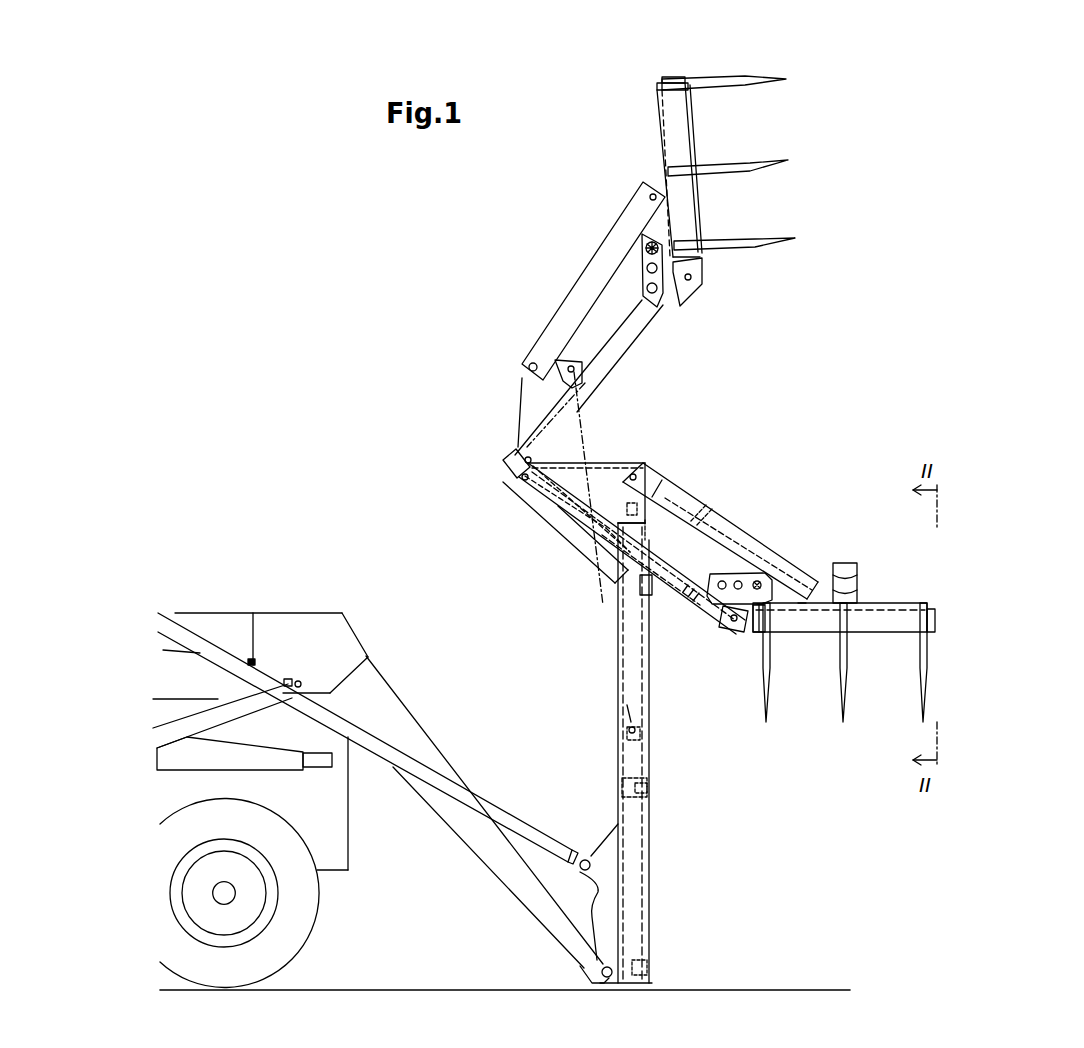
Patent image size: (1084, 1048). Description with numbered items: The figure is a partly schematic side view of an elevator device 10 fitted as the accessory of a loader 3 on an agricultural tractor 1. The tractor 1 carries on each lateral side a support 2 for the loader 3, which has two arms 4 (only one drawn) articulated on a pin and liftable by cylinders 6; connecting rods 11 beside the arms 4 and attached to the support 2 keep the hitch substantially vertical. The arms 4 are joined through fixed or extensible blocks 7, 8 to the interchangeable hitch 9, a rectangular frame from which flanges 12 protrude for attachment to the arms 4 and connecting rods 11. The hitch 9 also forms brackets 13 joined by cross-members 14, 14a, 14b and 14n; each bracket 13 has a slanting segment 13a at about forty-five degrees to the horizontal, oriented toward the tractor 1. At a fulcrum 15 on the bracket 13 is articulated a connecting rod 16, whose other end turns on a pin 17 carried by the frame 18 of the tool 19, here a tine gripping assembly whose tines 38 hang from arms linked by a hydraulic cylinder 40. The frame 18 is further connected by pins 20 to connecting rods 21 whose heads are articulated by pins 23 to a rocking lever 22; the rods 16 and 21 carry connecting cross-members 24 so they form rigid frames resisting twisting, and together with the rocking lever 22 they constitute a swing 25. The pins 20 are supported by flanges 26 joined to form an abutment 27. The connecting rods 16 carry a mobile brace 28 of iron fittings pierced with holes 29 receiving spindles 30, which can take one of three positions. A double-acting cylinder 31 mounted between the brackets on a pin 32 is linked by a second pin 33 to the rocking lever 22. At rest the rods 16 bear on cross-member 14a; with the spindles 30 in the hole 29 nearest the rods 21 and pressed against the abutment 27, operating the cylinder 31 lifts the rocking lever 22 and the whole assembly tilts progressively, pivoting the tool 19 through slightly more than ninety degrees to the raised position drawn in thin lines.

The agricultural tractor 1 is at (330, 850).
The support 2 is at (265, 765).
The loader 3 is at (432, 812).
The arm 4 is at (415, 732).
The cylinder 6 is at (254, 702).
The block 7 is at (578, 850).
The block 8 is at (600, 968).
The hitch 9 is at (586, 900).
The elevator device 10 is at (608, 662).
The connecting rod 11 is at (450, 784).
The flange 12 is at (607, 878).
The bracket 13 is at (630, 758).
The slanting segment 13a is at (562, 526).
The cross-member 14 is at (510, 458).
The cross-member 14a is at (630, 590).
The cross-member 14b is at (650, 790).
The cross-member 14n is at (647, 968).
The fulcrum 15 is at (518, 478).
The connecting rod 16 is at (663, 566).
The pin 17 is at (733, 624).
The frame 18 is at (756, 634).
The tool 19 is at (834, 675).
The pin 20 is at (850, 593).
The connecting rod 21 is at (735, 530).
The rocking lever 22 is at (608, 468).
The pin 23 is at (640, 478).
The connecting cross-member 24 is at (681, 602).
The swing 25 is at (700, 512).
The flange 26 is at (802, 612).
The abutment 27 is at (765, 600).
The mobile brace 28 is at (762, 573).
The hole 29 is at (712, 617).
The spindle 30 is at (762, 583).
The cylinder 31 is at (622, 572).
The pin 32 is at (628, 730).
The second pin 33 is at (655, 492).
The tine 38 is at (921, 672).
The hydraulic cylinder 40 is at (845, 563).